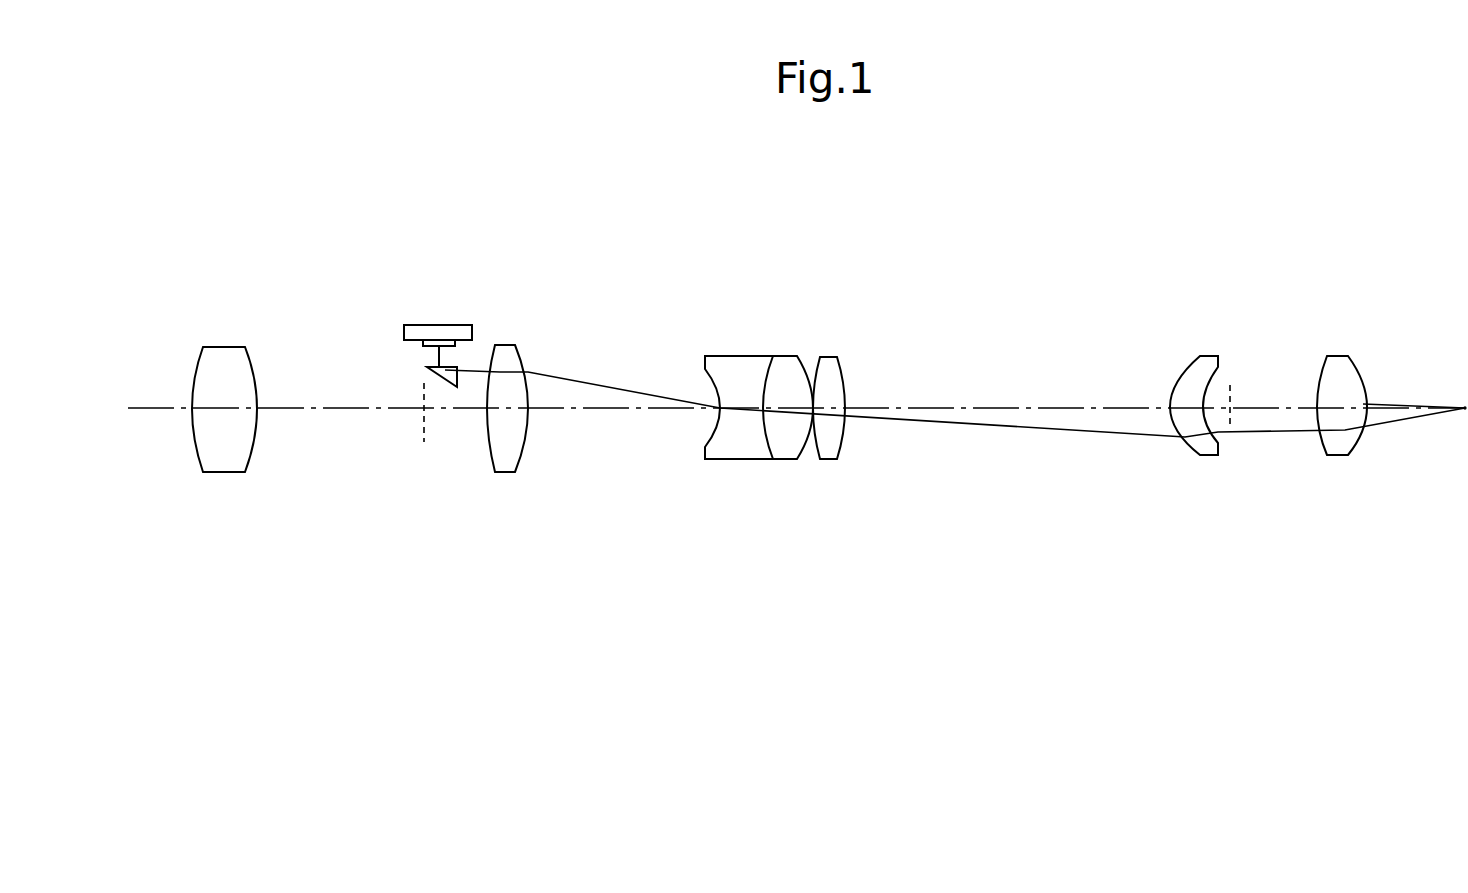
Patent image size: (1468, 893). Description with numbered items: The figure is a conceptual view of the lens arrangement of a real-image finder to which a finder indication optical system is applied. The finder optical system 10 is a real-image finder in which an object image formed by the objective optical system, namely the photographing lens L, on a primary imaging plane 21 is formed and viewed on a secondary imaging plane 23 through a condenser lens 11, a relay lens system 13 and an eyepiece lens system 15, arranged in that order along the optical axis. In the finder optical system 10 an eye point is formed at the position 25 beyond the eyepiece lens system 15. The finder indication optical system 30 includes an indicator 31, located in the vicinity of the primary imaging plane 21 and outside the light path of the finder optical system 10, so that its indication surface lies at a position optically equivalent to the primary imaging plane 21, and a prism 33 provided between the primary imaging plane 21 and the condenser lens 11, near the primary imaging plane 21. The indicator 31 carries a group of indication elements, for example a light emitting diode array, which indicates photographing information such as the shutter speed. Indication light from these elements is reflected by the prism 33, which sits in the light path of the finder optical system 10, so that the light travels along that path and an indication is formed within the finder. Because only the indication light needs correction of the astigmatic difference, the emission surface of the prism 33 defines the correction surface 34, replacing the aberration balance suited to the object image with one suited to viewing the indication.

The photographing lens L is at (225, 357).
The finder optical system 10 is at (920, 447).
The condenser lens 11 is at (501, 472).
The relay lens system 13 is at (699, 472).
The eyepiece lens system 15 is at (1185, 470).
The primary imaging plane 21 is at (424, 445).
The secondary imaging plane 23 is at (1233, 352).
The eye point 25 is at (1465, 418).
The finder indication optical system 30 is at (396, 352).
The indicator 31 is at (440, 325).
The prism 33 is at (428, 367).
The correction surface 34 is at (458, 370).